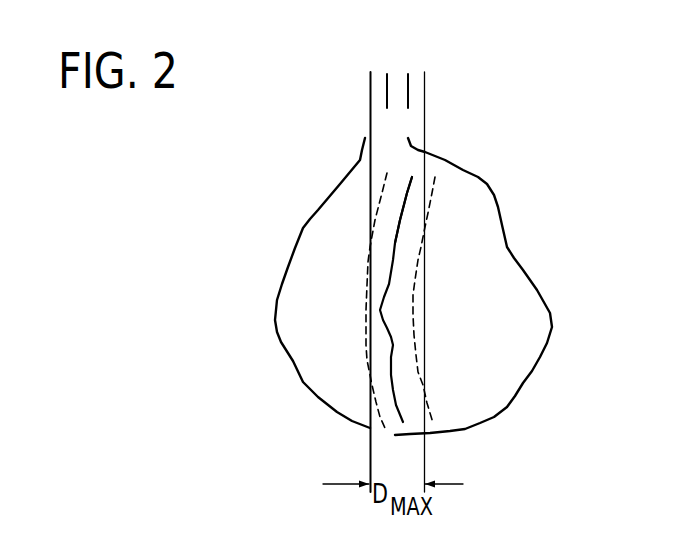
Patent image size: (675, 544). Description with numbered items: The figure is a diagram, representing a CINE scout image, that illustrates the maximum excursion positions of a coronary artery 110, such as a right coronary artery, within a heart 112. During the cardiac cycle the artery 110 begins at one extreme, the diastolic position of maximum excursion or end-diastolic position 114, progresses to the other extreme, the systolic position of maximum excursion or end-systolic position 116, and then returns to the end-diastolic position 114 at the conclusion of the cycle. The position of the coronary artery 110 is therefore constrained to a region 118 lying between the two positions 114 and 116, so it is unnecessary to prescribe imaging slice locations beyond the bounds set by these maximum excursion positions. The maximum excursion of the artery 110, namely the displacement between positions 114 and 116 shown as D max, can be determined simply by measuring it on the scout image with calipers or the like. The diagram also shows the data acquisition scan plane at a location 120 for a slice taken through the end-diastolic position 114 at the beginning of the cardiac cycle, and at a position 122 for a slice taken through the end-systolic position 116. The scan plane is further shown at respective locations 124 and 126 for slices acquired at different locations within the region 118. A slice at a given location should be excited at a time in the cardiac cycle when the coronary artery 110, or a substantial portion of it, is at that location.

The coronary artery 110 is at (393, 343).
The heart 112 is at (525, 383).
The end-diastolic position 114 is at (360, 332).
The end-systolic position 116 is at (428, 288).
The region 118 is at (415, 220).
The scan plane location 120 is at (370, 105).
The scan plane position 122 is at (425, 105).
The scan plane location 124 is at (387, 83).
The scan plane location 126 is at (408, 92).